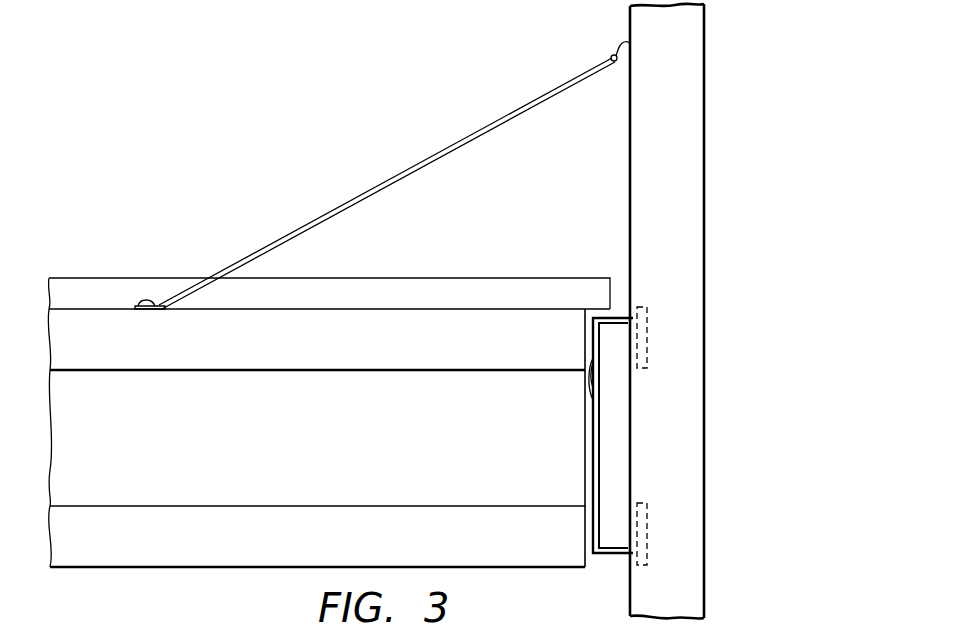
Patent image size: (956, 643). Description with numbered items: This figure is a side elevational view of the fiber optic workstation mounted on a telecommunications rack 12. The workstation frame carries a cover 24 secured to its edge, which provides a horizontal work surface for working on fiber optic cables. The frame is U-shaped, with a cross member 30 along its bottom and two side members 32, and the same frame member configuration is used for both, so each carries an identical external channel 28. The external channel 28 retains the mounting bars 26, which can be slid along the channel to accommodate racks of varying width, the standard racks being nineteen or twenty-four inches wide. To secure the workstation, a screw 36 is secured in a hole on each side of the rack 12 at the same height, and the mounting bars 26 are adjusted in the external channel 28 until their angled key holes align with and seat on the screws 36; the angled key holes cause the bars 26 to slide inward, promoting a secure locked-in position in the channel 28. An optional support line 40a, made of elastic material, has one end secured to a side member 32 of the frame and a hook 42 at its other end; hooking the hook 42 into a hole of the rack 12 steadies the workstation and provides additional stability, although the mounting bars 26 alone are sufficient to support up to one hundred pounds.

The rack 12 is at (705, 203).
The cover 24 is at (463, 277).
The external channel 28 is at (322, 354).
The side member 32 is at (323, 453).
The cross member 30 is at (583, 463).
The screw 36 is at (591, 390).
The mounting bar 26 is at (628, 437).
The support line 40a is at (384, 182).
The hook 42 is at (618, 48).